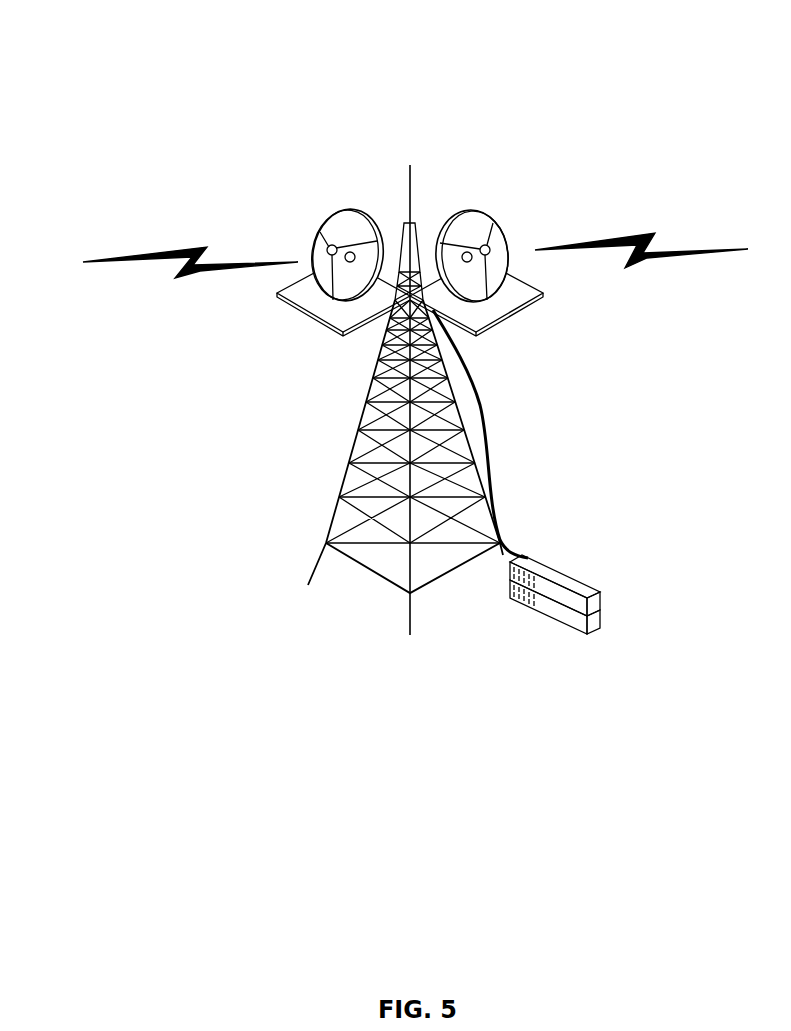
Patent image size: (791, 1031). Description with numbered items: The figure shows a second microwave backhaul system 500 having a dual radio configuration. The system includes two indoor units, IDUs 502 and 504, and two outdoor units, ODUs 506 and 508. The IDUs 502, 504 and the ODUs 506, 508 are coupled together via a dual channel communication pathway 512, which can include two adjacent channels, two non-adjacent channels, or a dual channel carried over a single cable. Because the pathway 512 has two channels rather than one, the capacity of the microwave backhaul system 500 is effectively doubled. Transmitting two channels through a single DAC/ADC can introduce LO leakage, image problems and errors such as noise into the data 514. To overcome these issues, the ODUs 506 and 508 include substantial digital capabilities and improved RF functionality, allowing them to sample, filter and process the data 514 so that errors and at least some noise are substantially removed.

The second microwave backhaul system 500 is at (182, 108).
The IDU 502 is at (573, 587).
The IDU 504 is at (598, 628).
The ODU 506 is at (538, 307).
The ODU 508 is at (290, 307).
The dual channel communication pathway 512 is at (485, 405).
The data 514 is at (495, 464).